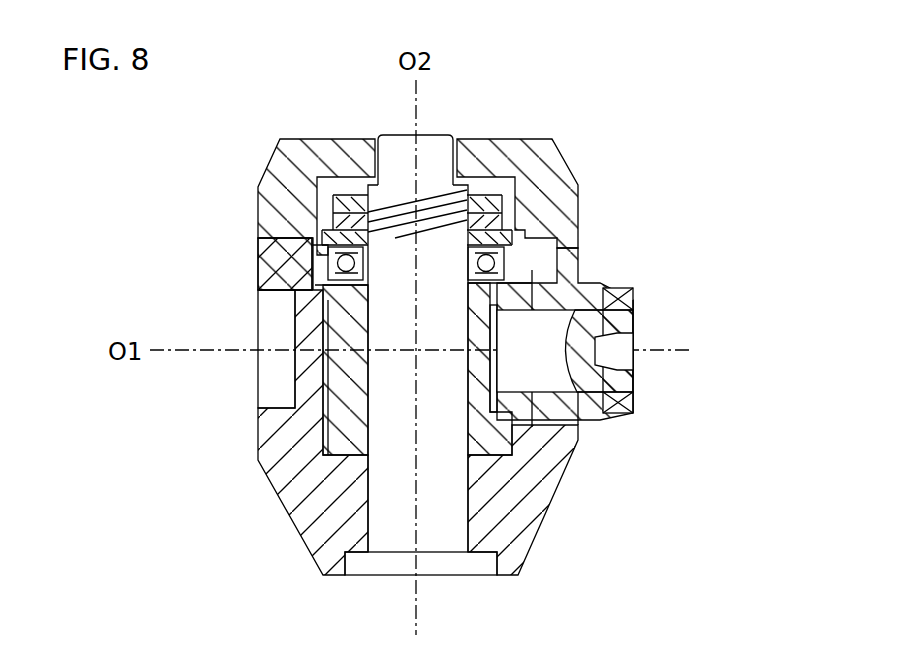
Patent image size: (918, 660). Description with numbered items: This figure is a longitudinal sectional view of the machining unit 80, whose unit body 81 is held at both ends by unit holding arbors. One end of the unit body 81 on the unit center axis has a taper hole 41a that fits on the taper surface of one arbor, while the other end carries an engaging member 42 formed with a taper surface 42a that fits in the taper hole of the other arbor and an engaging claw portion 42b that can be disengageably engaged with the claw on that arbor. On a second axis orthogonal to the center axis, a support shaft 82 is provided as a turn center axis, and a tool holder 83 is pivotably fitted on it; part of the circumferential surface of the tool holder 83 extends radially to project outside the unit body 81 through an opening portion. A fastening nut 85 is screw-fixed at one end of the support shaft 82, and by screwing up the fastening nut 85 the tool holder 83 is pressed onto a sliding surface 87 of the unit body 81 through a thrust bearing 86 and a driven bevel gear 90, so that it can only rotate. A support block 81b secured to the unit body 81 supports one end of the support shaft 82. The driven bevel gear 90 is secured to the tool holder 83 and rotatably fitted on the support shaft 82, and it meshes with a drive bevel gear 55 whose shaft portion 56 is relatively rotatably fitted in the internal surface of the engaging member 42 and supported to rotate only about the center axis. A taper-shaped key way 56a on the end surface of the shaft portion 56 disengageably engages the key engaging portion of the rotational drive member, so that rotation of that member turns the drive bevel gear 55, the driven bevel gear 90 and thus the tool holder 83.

The machining unit 80 is at (594, 131).
The unit body 81 is at (305, 513).
The support block 81b is at (500, 140).
The support shaft 82 is at (470, 520).
The tool holder 83 is at (457, 507).
The fastening nut 85 is at (348, 203).
The thrust bearing 86 is at (330, 270).
The sliding surface 87 is at (352, 455).
The driven bevel gear 90 is at (297, 313).
The taper hole 41a is at (275, 408).
The engaging member 42 is at (572, 270).
The taper surface 42a is at (600, 420).
The engaging claw portion 42b is at (607, 290).
The drive bevel gear 55 is at (503, 338).
The shaft portion 56 is at (563, 380).
The key way 56a is at (620, 332).